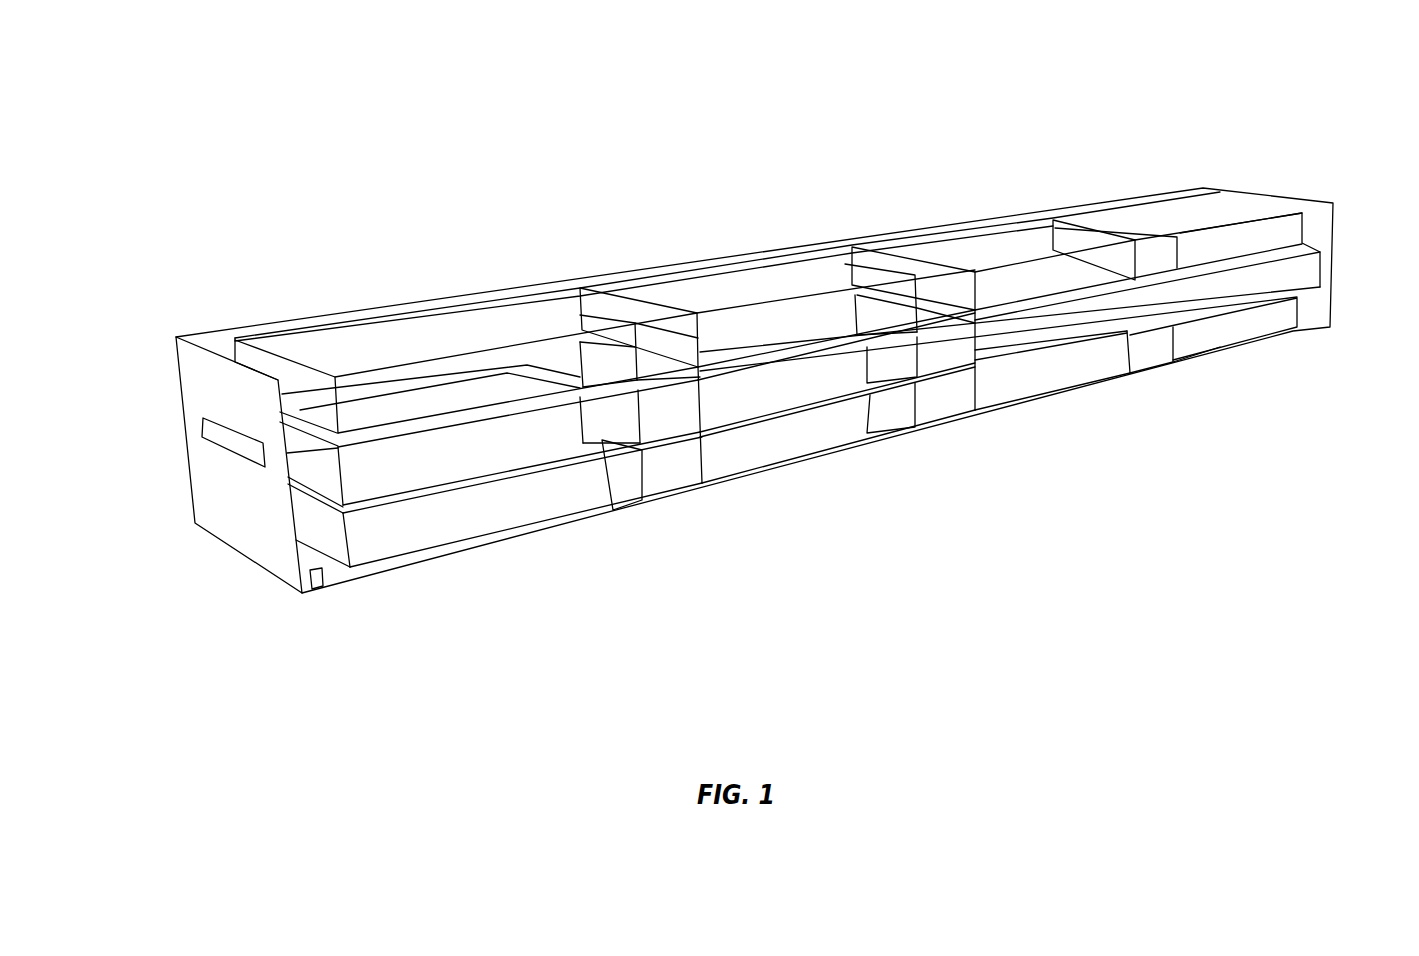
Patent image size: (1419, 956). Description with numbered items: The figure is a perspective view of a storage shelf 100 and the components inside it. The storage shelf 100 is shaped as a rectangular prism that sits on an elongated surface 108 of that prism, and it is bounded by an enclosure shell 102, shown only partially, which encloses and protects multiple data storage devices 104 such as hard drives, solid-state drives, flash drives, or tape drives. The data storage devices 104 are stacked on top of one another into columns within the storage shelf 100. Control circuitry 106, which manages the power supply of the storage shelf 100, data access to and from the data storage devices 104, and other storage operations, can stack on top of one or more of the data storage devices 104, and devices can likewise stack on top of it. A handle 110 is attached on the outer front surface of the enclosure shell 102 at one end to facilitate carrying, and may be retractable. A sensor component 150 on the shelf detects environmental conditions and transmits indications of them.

The storage shelf 100 is at (336, 115).
The enclosure shell 102 is at (260, 565).
The data storage devices 104 is at (1143, 215).
The control circuitry 106 is at (1318, 270).
The elongated surface 108 is at (363, 590).
The handle 110 is at (188, 432).
The sensor component 150 is at (313, 593).